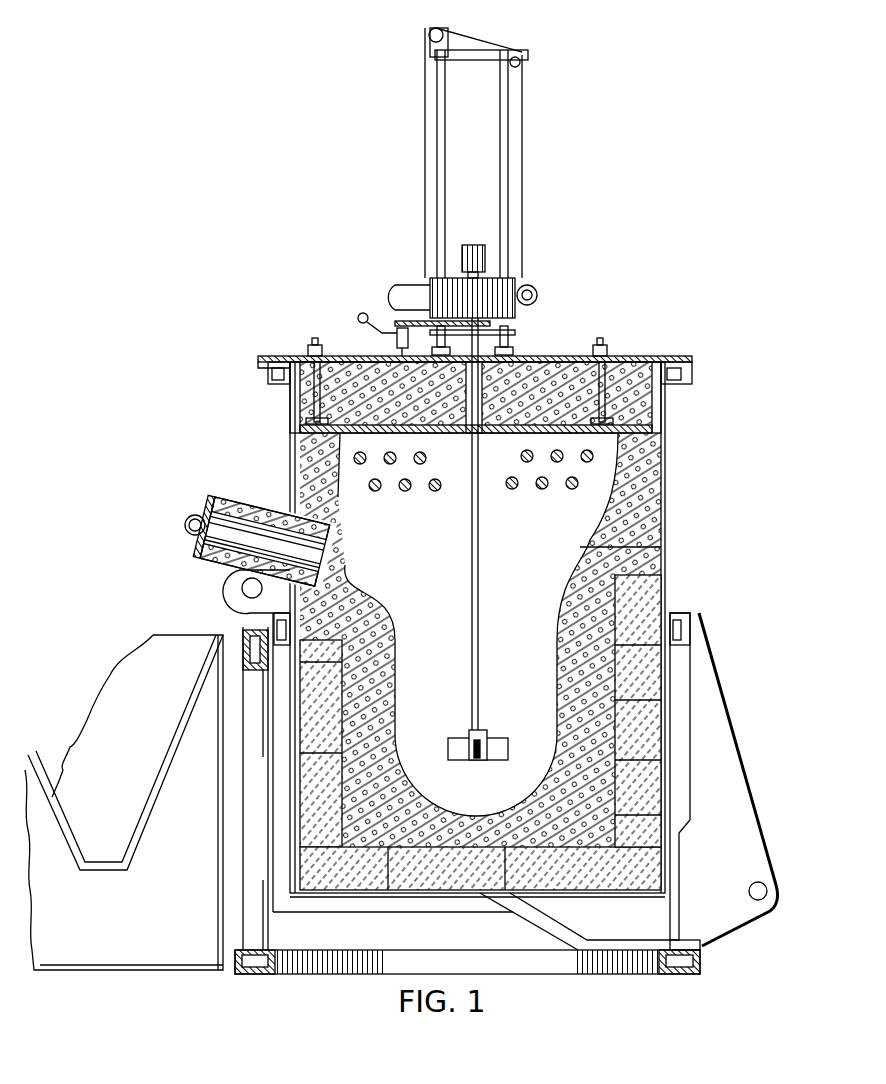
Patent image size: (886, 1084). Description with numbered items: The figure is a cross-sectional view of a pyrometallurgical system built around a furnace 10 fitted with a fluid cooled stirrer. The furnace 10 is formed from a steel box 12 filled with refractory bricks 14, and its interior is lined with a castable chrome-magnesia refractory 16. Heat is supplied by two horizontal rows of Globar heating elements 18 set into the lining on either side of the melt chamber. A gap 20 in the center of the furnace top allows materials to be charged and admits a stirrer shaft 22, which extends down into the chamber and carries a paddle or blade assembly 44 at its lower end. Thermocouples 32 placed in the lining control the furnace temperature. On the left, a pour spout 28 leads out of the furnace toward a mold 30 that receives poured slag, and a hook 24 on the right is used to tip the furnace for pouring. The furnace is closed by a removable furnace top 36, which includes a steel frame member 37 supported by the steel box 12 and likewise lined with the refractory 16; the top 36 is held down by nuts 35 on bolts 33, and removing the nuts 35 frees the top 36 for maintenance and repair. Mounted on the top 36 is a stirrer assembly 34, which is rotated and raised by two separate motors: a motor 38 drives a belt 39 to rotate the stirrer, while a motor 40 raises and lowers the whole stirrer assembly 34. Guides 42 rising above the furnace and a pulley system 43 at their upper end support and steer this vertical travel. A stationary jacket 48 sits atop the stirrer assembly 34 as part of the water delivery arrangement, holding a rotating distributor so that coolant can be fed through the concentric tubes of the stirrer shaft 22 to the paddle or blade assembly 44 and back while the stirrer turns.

The furnace 10 is at (508, 609).
The steel box 12 is at (662, 536).
The refractory bricks 14 is at (640, 613).
The castable chrome-magnesia refractory 16 is at (555, 390).
The Globar heating elements 18 is at (436, 491).
The gap 20 is at (462, 383).
The stirrer shaft 22 is at (470, 571).
The hook 24 is at (768, 890).
The pour spout 28 is at (241, 497).
The mold 30 is at (112, 911).
The thermocouples 32 is at (580, 548).
The bolts 33 is at (268, 376).
The stirrer assembly 34 is at (463, 284).
The nuts 35 is at (262, 356).
The removable furnace top 36 is at (636, 352).
The steel frame member 37 is at (258, 359).
The motor 38 is at (418, 288).
The belt 39 is at (490, 322).
The motor 40 is at (537, 291).
The guides 42 is at (500, 100).
The pulley system 43 is at (523, 48).
The paddle or blade assembly 44 is at (467, 730).
The stationary jacket 48 is at (474, 245).